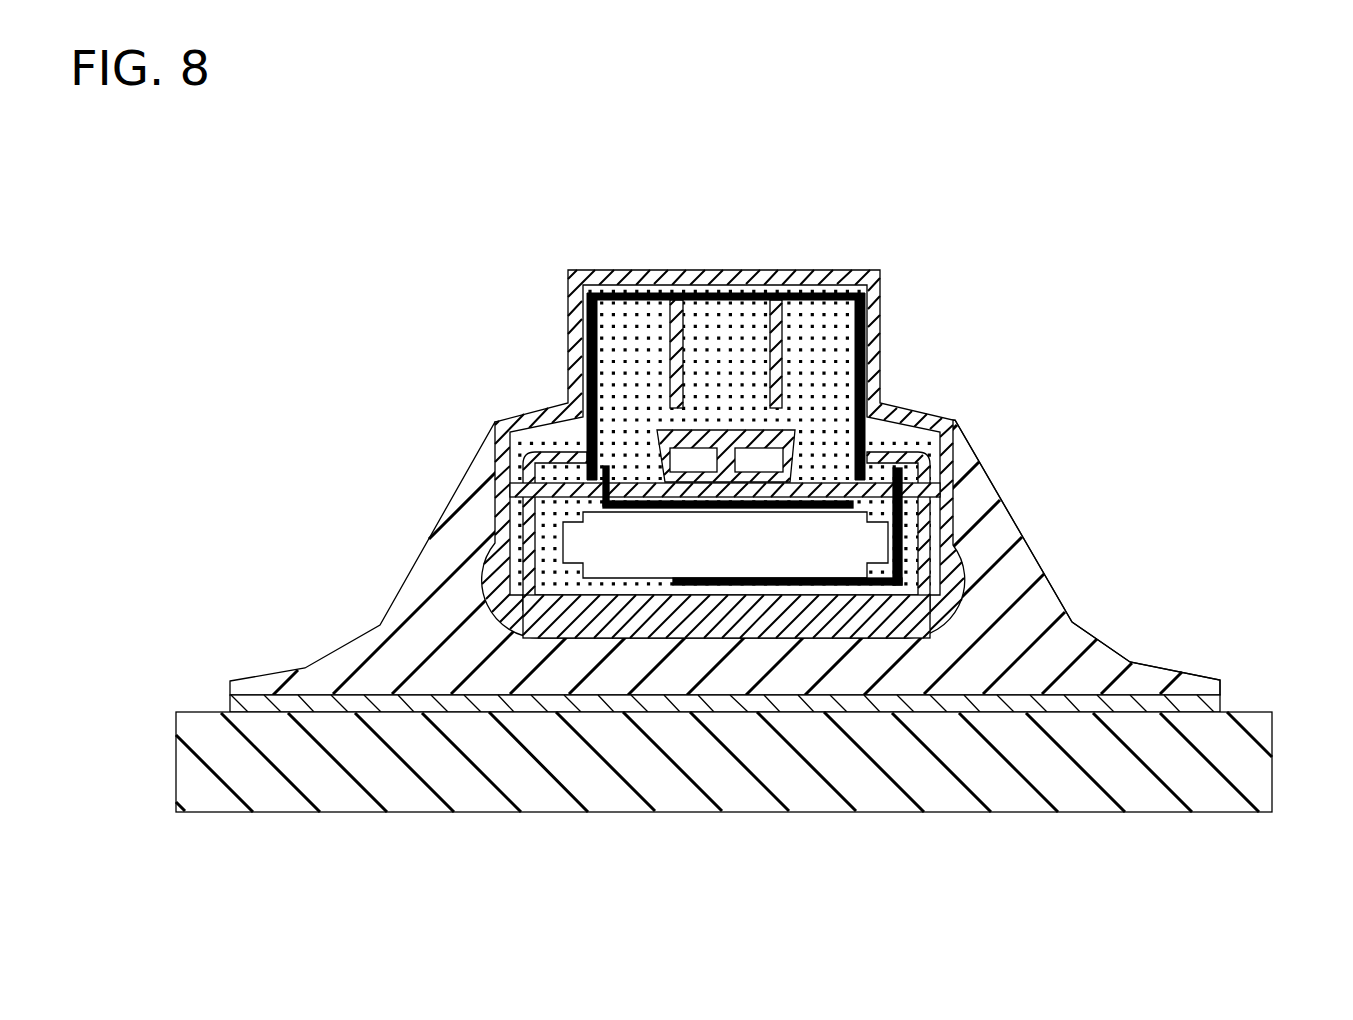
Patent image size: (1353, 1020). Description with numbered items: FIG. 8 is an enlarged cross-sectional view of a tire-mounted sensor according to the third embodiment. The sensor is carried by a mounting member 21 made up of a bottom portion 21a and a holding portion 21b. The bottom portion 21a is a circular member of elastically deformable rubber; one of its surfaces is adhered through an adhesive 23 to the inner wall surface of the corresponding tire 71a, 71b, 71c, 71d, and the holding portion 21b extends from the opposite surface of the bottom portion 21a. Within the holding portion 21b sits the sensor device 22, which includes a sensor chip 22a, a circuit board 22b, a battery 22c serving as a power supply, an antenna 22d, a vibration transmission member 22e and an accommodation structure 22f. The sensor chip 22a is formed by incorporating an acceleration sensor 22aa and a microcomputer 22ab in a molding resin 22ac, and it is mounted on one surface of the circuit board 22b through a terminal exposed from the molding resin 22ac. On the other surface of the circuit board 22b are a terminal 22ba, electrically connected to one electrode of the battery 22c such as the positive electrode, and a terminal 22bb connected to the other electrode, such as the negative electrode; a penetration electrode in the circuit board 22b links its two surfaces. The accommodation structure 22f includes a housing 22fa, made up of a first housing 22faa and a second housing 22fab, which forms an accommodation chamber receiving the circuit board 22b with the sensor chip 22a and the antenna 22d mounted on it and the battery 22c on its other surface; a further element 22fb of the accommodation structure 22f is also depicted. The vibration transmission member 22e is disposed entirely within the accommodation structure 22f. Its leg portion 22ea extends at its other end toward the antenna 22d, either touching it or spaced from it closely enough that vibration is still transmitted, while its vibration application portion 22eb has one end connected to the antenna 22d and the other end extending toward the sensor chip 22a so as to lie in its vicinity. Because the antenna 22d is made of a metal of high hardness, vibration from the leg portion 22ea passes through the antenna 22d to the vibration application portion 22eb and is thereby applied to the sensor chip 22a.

The mounting member 21 is at (368, 578).
The bottom portion 21a is at (1100, 660).
The holding portion 21b is at (977, 490).
The sensor device 22 is at (537, 313).
The sensor chip 22a is at (819, 394).
The acceleration sensor 22aa is at (690, 447).
The microcomputer 22ab is at (780, 432).
The molding resin 22ac is at (763, 447).
The circuit board 22b is at (943, 458).
The terminal 22ba is at (622, 505).
The terminal 22bb is at (882, 598).
The battery 22c is at (724, 556).
The antenna 22d is at (858, 383).
The vibration transmission member 22e is at (565, 389).
The leg portion 22ea is at (548, 450).
The vibration application portion 22eb is at (676, 368).
The accommodation structure 22f is at (965, 529).
The housing 22fa is at (964, 530).
The first housing 22faa is at (950, 593).
The second housing 22fab is at (947, 523).
The shield member upper plate 22fb is at (933, 512).
The adhesive 23 is at (1200, 704).
The tire 71a is at (741, 792).
The tire 71b is at (724, 762).
The tire 71c is at (724, 762).
The tire 71d is at (1085, 797).